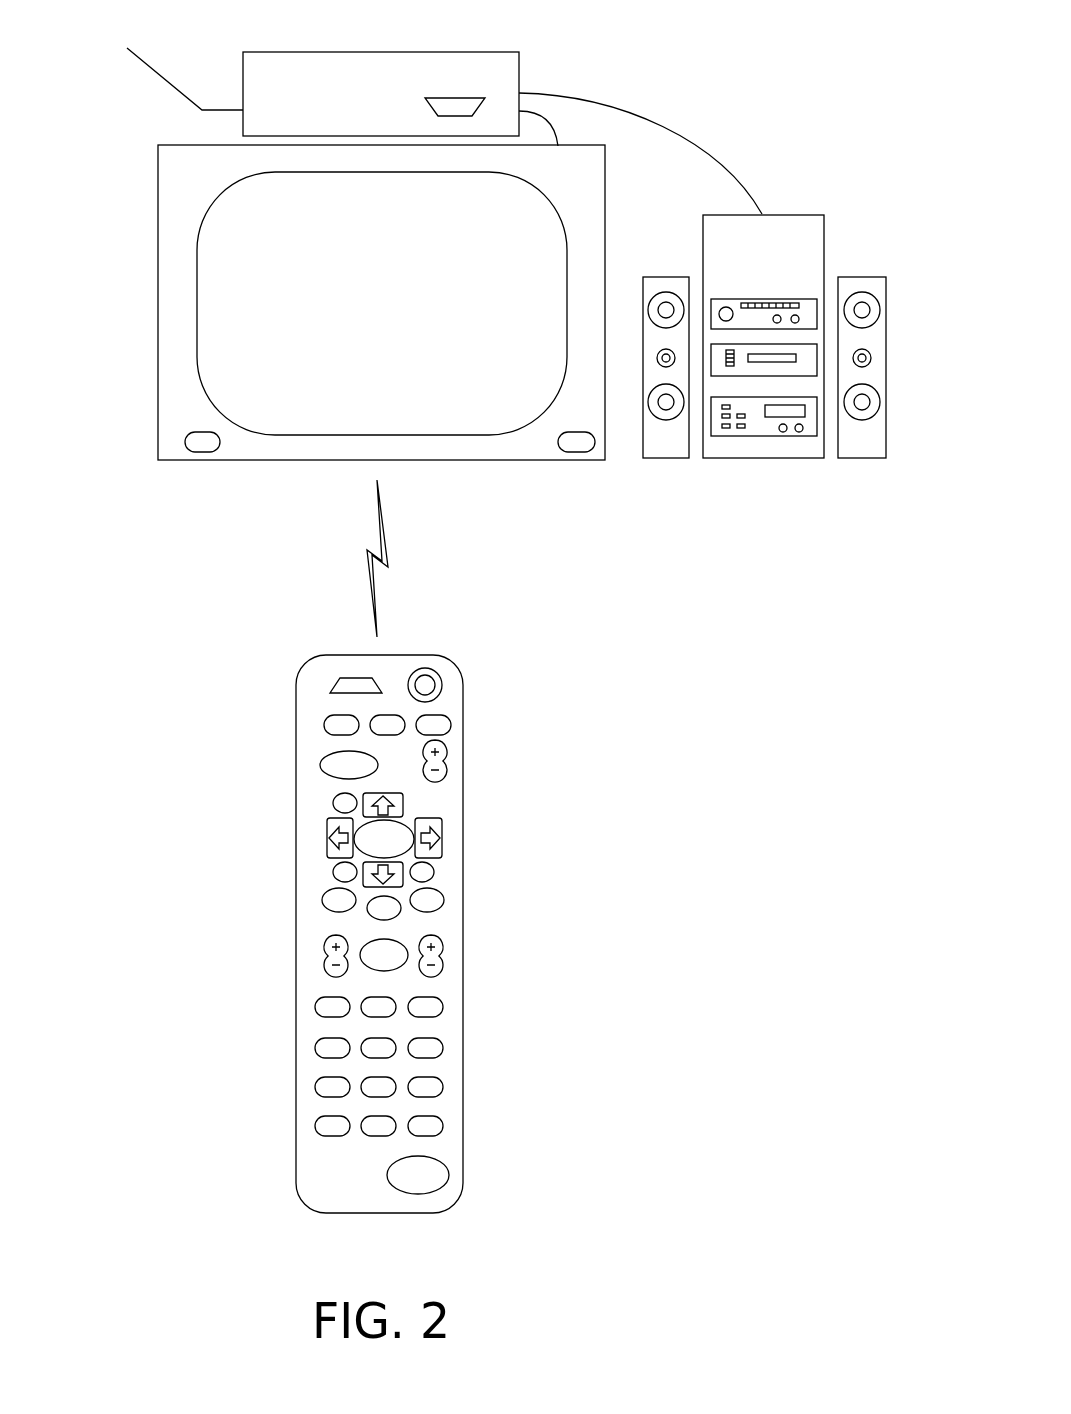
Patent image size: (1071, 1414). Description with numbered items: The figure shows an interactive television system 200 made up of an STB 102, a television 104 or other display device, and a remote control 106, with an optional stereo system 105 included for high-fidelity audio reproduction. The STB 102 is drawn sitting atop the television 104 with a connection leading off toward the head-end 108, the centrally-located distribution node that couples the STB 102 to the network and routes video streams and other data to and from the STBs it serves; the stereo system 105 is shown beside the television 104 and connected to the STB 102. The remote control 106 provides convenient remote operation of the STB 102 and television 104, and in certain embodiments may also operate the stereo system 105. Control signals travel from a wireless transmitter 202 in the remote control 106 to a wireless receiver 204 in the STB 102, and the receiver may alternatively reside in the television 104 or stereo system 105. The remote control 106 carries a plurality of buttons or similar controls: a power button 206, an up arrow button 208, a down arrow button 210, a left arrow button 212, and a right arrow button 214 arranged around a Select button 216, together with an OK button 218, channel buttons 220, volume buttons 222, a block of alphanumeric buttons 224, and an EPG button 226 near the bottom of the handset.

The interactive television system 200 is at (818, 47).
The head-end 108 is at (162, 67).
The STB 102 is at (502, 133).
The television 104 is at (381, 302).
The stereo system 105 is at (764, 336).
The remote control 106 is at (463, 928).
The wireless transmitter 202 is at (340, 688).
The wireless receiver 204 is at (453, 98).
The power button 206 is at (442, 683).
The up arrow button 208 is at (403, 805).
The down arrow button 210 is at (363, 877).
The left arrow button 212 is at (327, 838).
The right arrow button 214 is at (442, 838).
The Select button 216 is at (403, 821).
The OK button 218 is at (368, 942).
The channel buttons 220 is at (325, 970).
The volume buttons 222 is at (442, 967).
The alphanumeric buttons 224 is at (318, 988).
The EPG button 226 is at (449, 1175).